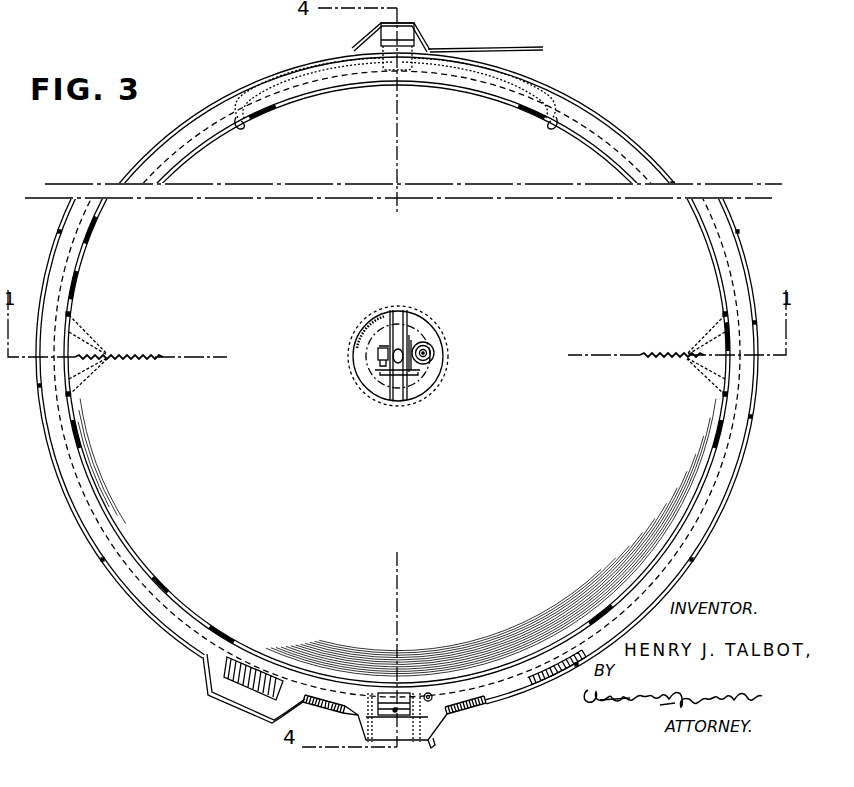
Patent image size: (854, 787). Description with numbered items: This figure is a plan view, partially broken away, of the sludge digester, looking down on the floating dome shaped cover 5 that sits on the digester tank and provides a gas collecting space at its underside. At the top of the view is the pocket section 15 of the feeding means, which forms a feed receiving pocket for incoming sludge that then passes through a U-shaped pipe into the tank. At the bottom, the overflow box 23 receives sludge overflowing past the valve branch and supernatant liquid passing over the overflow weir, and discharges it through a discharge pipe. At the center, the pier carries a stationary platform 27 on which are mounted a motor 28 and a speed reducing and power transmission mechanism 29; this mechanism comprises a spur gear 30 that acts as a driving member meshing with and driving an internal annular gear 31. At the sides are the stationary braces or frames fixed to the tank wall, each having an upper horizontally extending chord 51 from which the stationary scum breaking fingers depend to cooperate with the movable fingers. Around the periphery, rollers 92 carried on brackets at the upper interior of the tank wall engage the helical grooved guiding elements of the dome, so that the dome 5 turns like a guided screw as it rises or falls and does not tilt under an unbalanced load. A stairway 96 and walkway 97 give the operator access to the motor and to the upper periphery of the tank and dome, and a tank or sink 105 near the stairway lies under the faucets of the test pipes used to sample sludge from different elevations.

The floating dome shaped cover 5 is at (397, 354).
The pocket section 15 is at (392, 33).
The overflow box 23 is at (394, 707).
The stationary platform 27 is at (424, 333).
The motor 28 is at (380, 360).
The speed reducing and power transmission mechanism 29 is at (428, 354).
The spur gear 30 is at (430, 360).
The internal annular gear 31 is at (408, 335).
The chord 51 is at (696, 354).
The rollers 92 is at (74, 273).
The stairway 96 is at (562, 684).
The walkway 97 is at (131, 580).
The tank or sink 105 is at (409, 731).